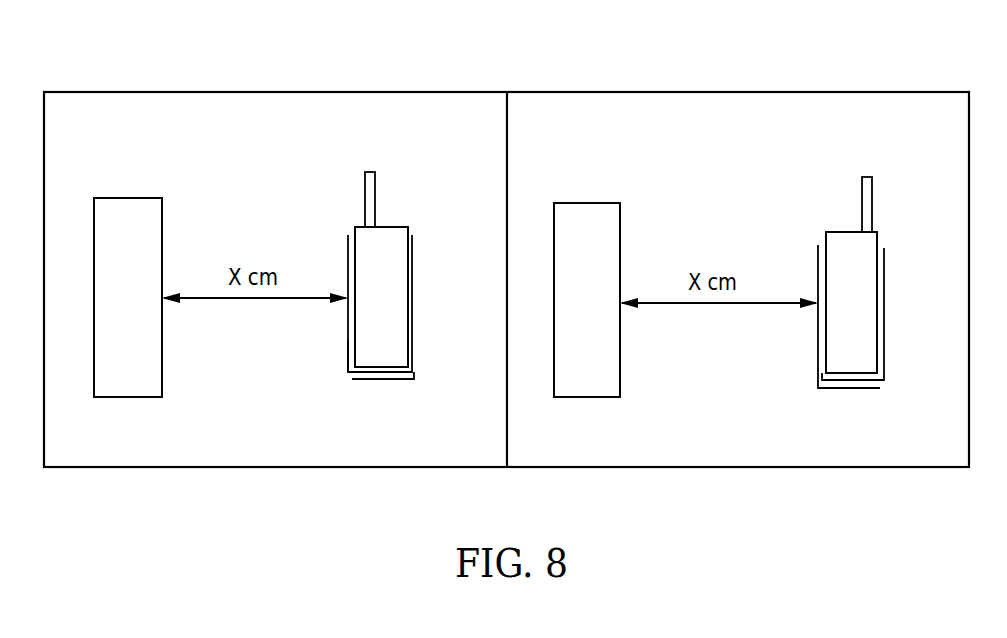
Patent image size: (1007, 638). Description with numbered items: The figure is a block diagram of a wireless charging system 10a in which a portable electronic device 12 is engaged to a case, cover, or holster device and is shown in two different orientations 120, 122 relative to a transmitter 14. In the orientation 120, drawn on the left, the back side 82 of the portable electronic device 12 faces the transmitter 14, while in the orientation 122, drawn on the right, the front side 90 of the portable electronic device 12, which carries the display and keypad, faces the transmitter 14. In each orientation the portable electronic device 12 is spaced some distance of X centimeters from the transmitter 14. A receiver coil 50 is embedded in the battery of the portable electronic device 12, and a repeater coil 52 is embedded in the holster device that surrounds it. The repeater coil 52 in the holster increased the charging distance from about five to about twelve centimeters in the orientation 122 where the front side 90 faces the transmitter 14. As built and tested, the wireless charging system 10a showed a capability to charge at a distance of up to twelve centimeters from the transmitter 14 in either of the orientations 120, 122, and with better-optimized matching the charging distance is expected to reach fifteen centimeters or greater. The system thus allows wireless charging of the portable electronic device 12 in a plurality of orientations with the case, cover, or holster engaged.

The wireless charging system 10a is at (583, 34).
The portable electronic device 12 is at (392, 227).
The transmitter 14 is at (127, 198).
The receiver coil 50 is at (348, 365).
The repeater coil 52 is at (412, 306).
The back side 82 is at (356, 325).
The front side 90 is at (410, 268).
The orientation 120 is at (256, 92).
The orientation 122 is at (718, 92).